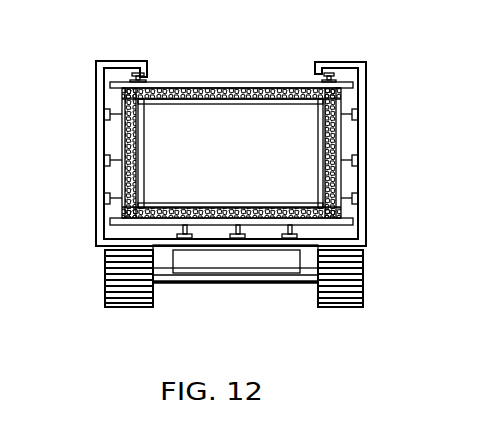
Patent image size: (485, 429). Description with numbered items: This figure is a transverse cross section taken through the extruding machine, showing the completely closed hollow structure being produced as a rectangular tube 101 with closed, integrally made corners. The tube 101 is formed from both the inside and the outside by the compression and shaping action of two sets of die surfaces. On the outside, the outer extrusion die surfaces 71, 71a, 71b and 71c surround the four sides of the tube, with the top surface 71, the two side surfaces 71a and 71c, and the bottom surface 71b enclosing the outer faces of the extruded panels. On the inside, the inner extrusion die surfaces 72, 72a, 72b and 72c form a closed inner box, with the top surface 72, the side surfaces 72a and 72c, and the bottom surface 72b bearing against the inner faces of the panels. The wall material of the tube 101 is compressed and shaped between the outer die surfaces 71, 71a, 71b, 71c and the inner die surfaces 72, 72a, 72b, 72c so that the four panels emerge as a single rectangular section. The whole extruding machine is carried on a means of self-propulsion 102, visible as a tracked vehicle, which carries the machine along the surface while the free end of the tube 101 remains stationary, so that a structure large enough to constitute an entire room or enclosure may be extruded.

The outer extrusion die surface 71 is at (158, 82).
The outer extrusion die surface 71a is at (124, 137).
The outer extrusion die surface 71b is at (262, 224).
The outer extrusion die surface 71c is at (340, 131).
The inner extrusion die surface 72 is at (230, 153).
The inner extrusion die surface 72a is at (140, 132).
The inner extrusion die surface 72b is at (222, 208).
The inner extrusion die surface 72c is at (322, 130).
The rectangular tube 101 is at (233, 90).
The means of self-propulsion 102 is at (364, 268).